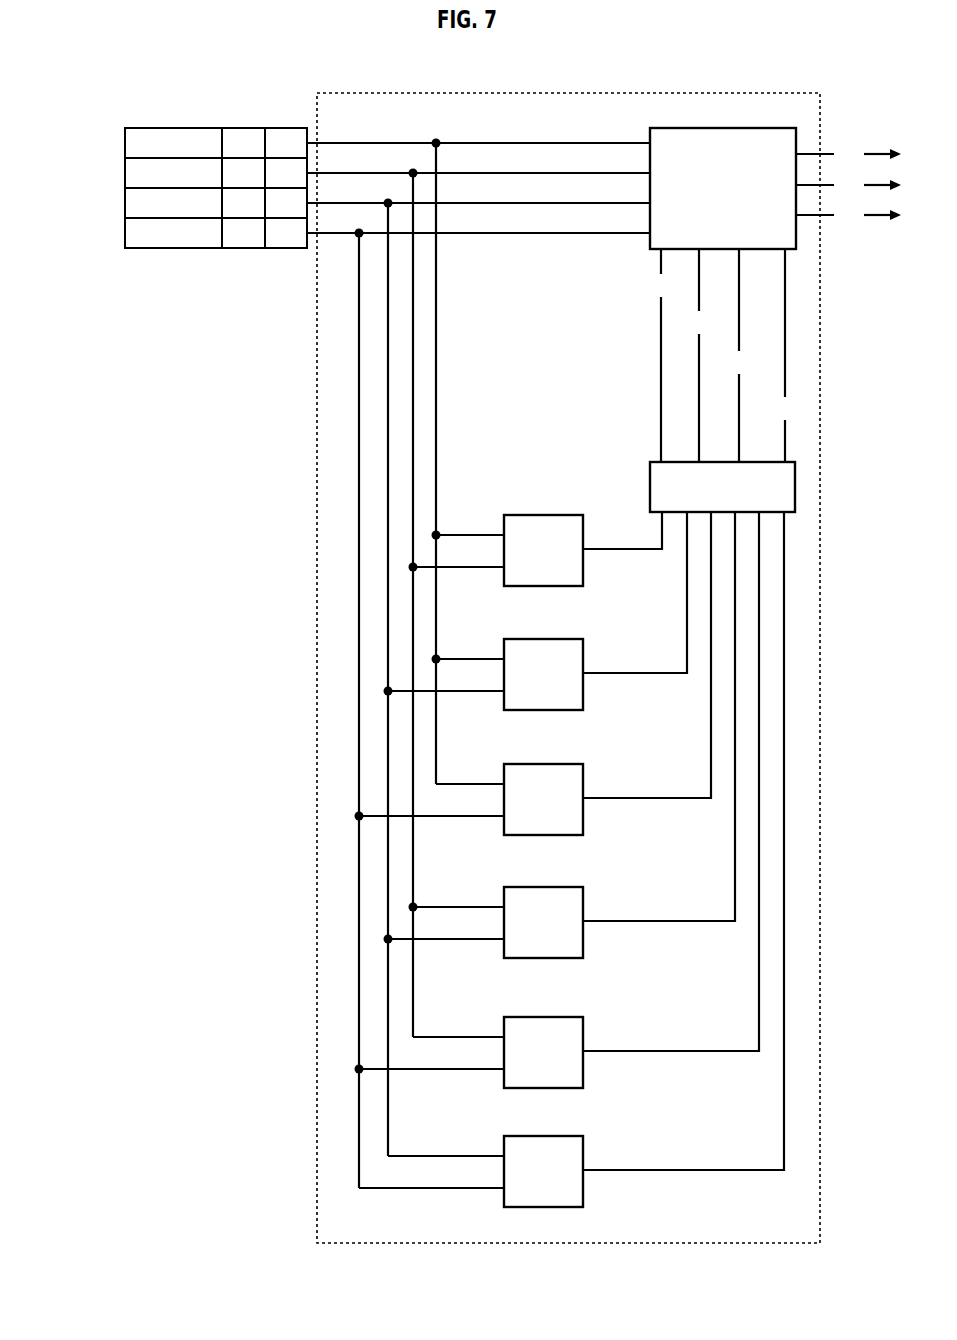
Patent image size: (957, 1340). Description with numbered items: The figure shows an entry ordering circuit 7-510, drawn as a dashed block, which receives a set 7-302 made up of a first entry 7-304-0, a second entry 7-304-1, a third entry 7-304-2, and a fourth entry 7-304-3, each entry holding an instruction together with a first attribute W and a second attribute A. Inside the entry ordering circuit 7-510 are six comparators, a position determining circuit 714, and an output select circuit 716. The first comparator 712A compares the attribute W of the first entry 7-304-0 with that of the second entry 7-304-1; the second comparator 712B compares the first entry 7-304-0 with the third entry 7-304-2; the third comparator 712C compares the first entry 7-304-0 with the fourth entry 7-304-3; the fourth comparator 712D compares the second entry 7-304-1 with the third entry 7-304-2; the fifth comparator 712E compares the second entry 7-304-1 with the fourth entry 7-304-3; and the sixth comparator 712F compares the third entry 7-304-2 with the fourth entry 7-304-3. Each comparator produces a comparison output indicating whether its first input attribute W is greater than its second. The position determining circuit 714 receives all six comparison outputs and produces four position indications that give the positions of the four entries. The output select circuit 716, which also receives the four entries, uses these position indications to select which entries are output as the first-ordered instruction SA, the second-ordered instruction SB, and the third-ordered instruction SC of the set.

The set 7-302 is at (170, 149).
The first entry 7-304-0 is at (125, 143).
The second entry 7-304-1 is at (125, 173).
The third entry 7-304-2 is at (125, 203).
The fourth entry 7-304-3 is at (125, 233).
The entry ordering circuit 7-510 is at (408, 93).
The output select circuit 716 is at (668, 128).
The position determining circuit 714 is at (650, 468).
The first comparator 712A is at (544, 515).
The second comparator 712B is at (544, 639).
The third comparator 712C is at (544, 764).
The fourth comparator 712D is at (544, 887).
The fifth comparator 712E is at (544, 1017).
The sixth comparator 712F is at (544, 1136).